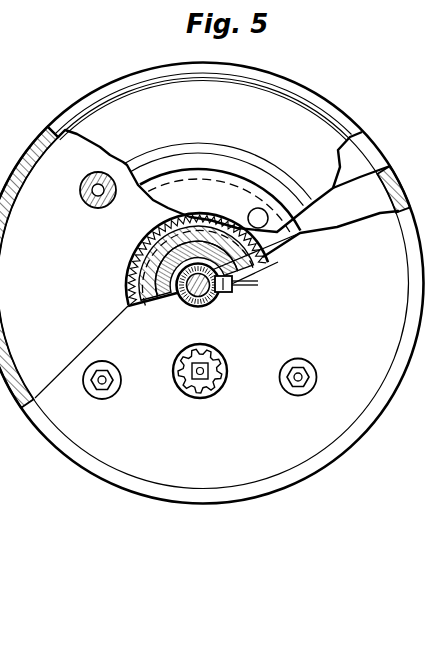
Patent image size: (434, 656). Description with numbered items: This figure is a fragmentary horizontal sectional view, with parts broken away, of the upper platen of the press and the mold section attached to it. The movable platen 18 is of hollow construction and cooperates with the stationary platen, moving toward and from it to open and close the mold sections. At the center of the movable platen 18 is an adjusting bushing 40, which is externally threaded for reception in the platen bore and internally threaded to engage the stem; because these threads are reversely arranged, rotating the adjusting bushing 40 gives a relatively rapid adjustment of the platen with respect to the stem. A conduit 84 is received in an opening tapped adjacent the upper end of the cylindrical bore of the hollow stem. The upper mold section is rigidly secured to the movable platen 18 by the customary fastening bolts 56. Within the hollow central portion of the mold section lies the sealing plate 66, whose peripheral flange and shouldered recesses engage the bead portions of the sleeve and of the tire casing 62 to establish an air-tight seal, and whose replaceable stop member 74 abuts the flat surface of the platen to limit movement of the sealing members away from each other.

The movable platen 18 is at (212, 283).
The tire casing 62 is at (219, 152).
The sealing plate 66 is at (217, 303).
The stop member 74 is at (90, 200).
The adjusting bushing 40 is at (167, 320).
The conduit 84 is at (272, 266).
The fastening bolt 56 is at (307, 364).